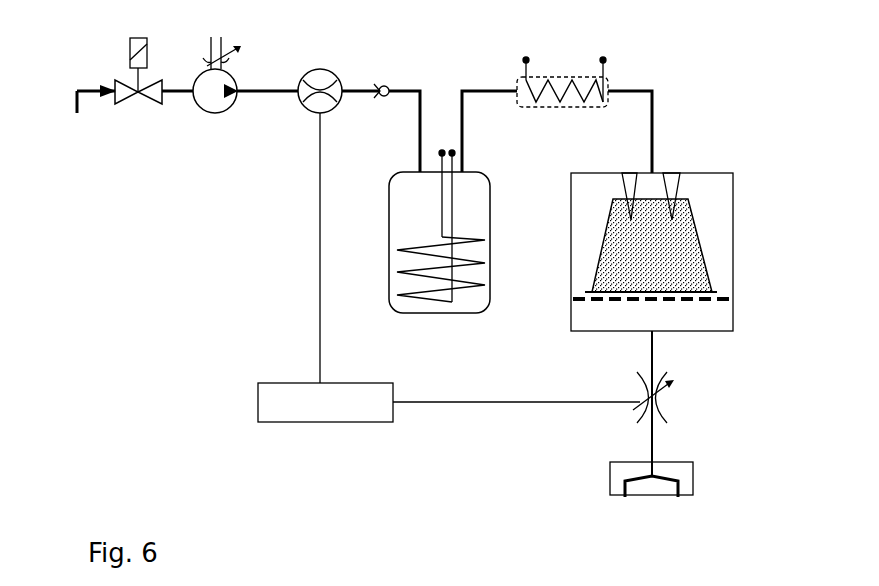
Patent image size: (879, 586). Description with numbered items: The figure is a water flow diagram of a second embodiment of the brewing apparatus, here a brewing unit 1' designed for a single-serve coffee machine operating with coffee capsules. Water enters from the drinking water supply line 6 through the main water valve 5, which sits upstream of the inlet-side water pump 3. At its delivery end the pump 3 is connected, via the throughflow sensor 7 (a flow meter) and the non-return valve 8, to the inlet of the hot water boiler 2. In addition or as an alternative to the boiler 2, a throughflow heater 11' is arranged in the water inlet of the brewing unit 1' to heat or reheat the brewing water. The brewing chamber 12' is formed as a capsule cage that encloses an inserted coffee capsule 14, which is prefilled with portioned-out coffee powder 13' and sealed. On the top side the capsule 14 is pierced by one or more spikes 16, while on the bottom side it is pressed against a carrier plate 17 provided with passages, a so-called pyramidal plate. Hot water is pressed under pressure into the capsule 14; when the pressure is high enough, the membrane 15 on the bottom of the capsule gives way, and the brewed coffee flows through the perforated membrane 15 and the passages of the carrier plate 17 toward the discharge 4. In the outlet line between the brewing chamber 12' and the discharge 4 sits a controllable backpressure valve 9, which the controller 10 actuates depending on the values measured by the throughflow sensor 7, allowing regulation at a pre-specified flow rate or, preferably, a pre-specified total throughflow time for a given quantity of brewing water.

The brewing unit 1' is at (672, 240).
The hot water boiler 2 is at (489, 174).
The water pump 3 is at (225, 115).
The discharge 4 is at (693, 470).
The main water valve 5 is at (135, 105).
The drinking water supply line 6 is at (78, 108).
The throughflow sensor 7 is at (330, 69).
The non-return valve 8 is at (392, 82).
The backpressure valve 9 is at (668, 400).
The controller 10 is at (363, 422).
The throughflow heater 11' is at (602, 69).
The brewing chamber 12' is at (692, 248).
The coffee powder 13' is at (700, 261).
The coffee capsule 14 is at (697, 232).
The membrane 15 is at (600, 290).
The spikes 16 is at (633, 192).
The carrier plate 17 is at (592, 301).